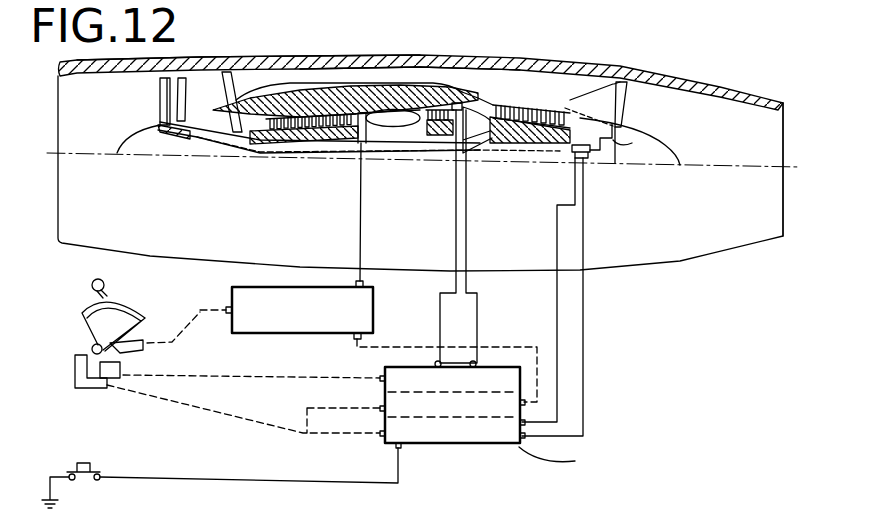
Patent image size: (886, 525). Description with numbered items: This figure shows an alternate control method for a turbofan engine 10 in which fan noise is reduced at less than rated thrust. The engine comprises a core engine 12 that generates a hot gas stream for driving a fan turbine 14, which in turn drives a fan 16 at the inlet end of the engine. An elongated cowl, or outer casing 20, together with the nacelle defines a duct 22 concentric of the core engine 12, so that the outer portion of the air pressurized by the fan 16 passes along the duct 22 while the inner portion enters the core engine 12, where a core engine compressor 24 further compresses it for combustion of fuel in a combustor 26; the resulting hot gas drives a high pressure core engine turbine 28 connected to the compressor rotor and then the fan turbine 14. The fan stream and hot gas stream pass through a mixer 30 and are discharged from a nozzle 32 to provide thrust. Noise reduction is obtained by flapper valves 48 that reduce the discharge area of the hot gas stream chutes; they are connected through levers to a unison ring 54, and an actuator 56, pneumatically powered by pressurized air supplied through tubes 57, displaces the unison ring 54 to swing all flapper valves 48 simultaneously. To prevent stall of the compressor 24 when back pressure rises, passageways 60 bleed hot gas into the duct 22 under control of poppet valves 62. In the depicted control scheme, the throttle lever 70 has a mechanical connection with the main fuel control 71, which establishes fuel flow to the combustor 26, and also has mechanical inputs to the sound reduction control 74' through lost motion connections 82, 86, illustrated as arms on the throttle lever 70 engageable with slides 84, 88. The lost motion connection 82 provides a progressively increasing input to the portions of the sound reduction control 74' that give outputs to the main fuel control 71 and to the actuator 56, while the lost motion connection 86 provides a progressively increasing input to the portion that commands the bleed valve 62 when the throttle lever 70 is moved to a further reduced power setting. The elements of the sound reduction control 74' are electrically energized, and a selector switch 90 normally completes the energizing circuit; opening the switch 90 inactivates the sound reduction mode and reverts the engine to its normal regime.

The turbofan engine 10 is at (73, 251).
The core engine 12 is at (359, 80).
The fan turbine 14 is at (530, 150).
The fan 16 is at (157, 96).
The outer casing 20 is at (296, 58).
The duct 22 is at (405, 72).
The core engine compressor 24 is at (257, 132).
The combustor 26 is at (385, 128).
The core engine turbine 28 is at (441, 143).
The mixer 30 is at (631, 101).
The nozzle 32 is at (782, 118).
The flapper valve 48 is at (628, 112).
The unison ring 54 is at (622, 143).
The actuator 56 is at (645, 161).
The tubes 57 is at (583, 343).
The passageways 60 is at (480, 105).
The poppet valves 62 is at (452, 93).
The throttle lever 70 is at (120, 299).
The main fuel control 71 is at (232, 293).
The sound reduction control 74' is at (576, 431).
The lost motion connection 82 is at (92, 350).
The slide 84 is at (80, 388).
The lost motion connection 86 is at (127, 348).
The slide 88 is at (130, 370).
The selector switch 90 is at (92, 463).